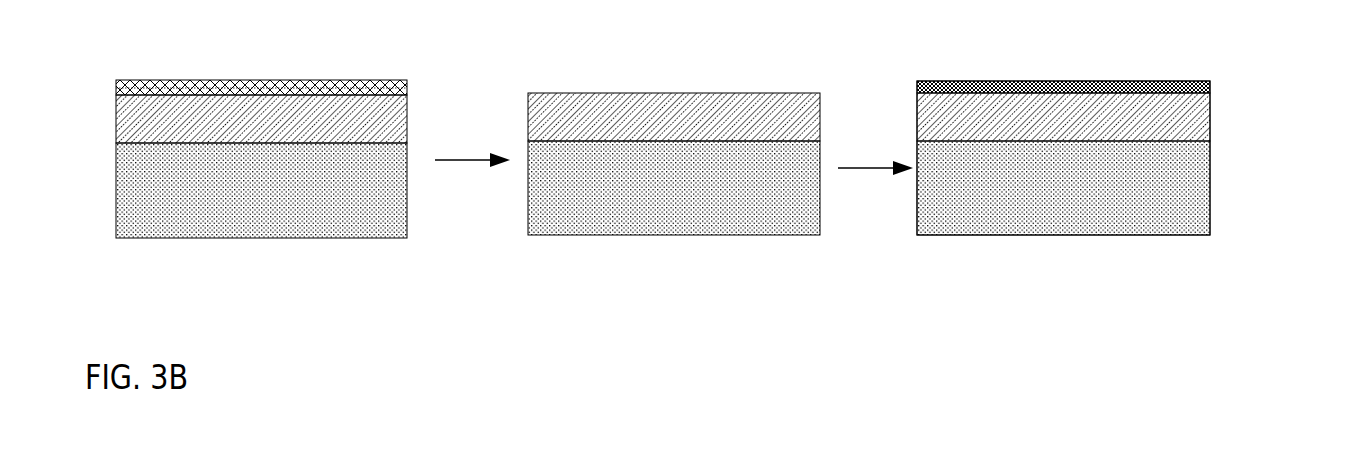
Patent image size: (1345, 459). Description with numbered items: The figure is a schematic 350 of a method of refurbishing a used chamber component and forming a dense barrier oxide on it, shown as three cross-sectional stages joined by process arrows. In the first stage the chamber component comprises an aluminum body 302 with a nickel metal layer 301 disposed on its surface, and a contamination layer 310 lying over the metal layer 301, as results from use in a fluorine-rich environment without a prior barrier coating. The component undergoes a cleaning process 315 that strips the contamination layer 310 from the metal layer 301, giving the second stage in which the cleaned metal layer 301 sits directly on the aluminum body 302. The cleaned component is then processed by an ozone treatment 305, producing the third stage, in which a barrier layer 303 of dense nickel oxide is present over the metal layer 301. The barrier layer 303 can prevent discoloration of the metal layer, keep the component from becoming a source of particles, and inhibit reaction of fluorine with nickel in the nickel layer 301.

The nickel layer 301 is at (407, 122).
The aluminum body 302 is at (240, 238).
The barrier layer 303 is at (1210, 83).
The ozone treatment 305 is at (860, 167).
The contamination layer 310 is at (407, 82).
The cleaning process 315 is at (467, 162).
The schematic 350 is at (915, 302).